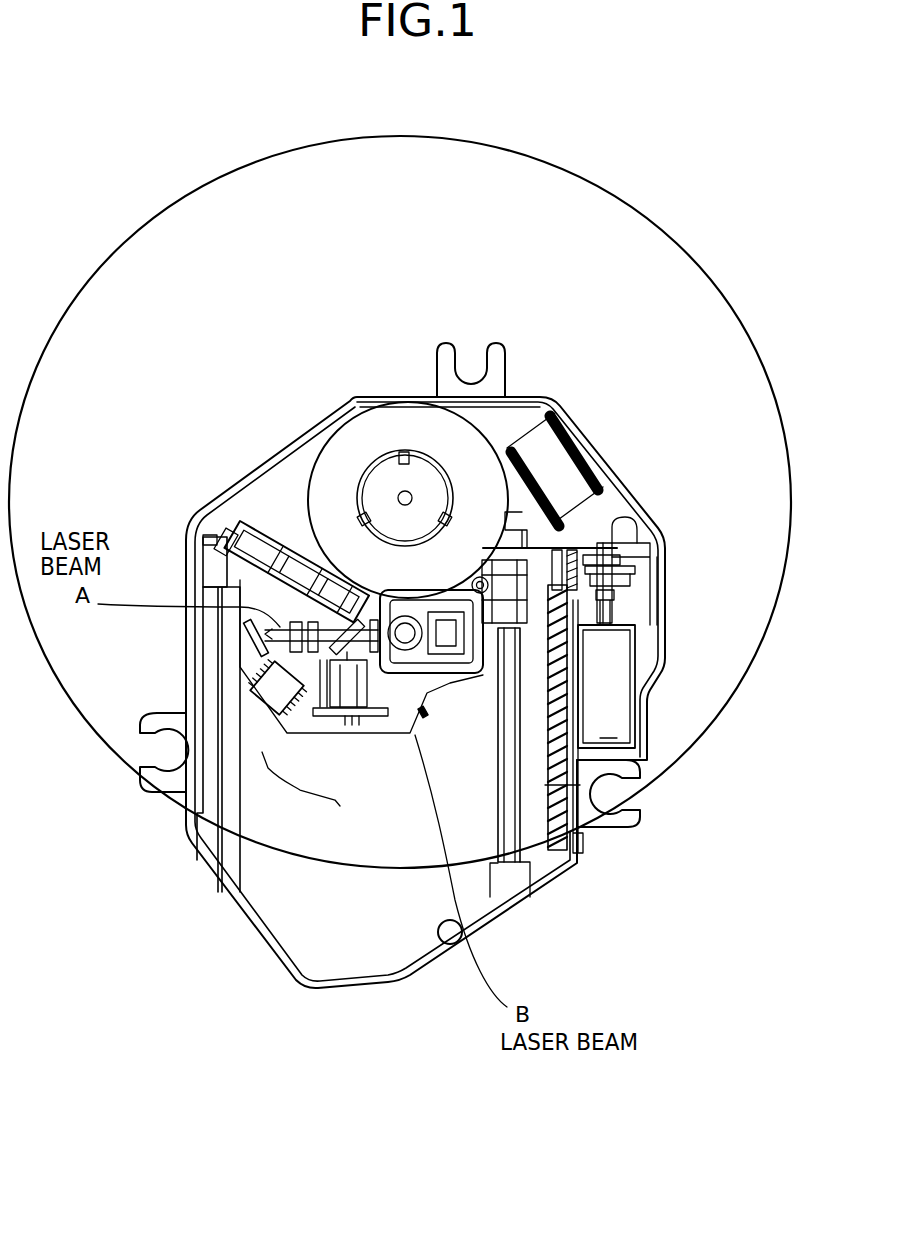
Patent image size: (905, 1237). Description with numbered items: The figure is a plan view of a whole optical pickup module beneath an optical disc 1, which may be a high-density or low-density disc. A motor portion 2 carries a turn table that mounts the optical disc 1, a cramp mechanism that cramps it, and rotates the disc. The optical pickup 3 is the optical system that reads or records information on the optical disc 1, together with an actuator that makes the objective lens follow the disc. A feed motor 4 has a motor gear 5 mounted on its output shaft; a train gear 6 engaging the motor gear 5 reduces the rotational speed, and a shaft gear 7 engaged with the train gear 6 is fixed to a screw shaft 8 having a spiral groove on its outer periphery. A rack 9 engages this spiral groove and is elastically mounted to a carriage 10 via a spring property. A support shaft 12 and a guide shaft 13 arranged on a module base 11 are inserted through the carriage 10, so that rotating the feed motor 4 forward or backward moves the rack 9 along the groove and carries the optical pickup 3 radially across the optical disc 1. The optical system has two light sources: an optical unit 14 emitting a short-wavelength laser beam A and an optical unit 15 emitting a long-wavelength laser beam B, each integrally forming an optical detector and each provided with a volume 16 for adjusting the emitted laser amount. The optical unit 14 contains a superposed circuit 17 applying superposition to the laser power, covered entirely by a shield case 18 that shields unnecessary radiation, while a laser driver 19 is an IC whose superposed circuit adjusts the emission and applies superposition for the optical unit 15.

The optical disc 1 is at (622, 197).
The motor portion 2 is at (393, 432).
The optical pickup 3 is at (292, 788).
The feed motor 4 is at (617, 728).
The motor gear 5 is at (613, 533).
The train gear 6 is at (585, 580).
The shaft gear 7 is at (615, 545).
The screw shaft 8 is at (585, 828).
The rack 9 is at (590, 470).
The carriage 10 is at (363, 665).
The module base 11 is at (533, 410).
The support shaft 12 is at (540, 822).
The guide shaft 13 is at (200, 780).
The optical unit 14 is at (285, 585).
The optical unit 15 is at (370, 733).
The volume 16 is at (430, 710).
The superposed circuit 17 is at (277, 540).
The shield case 18 is at (236, 530).
The laser driver 19 is at (262, 672).